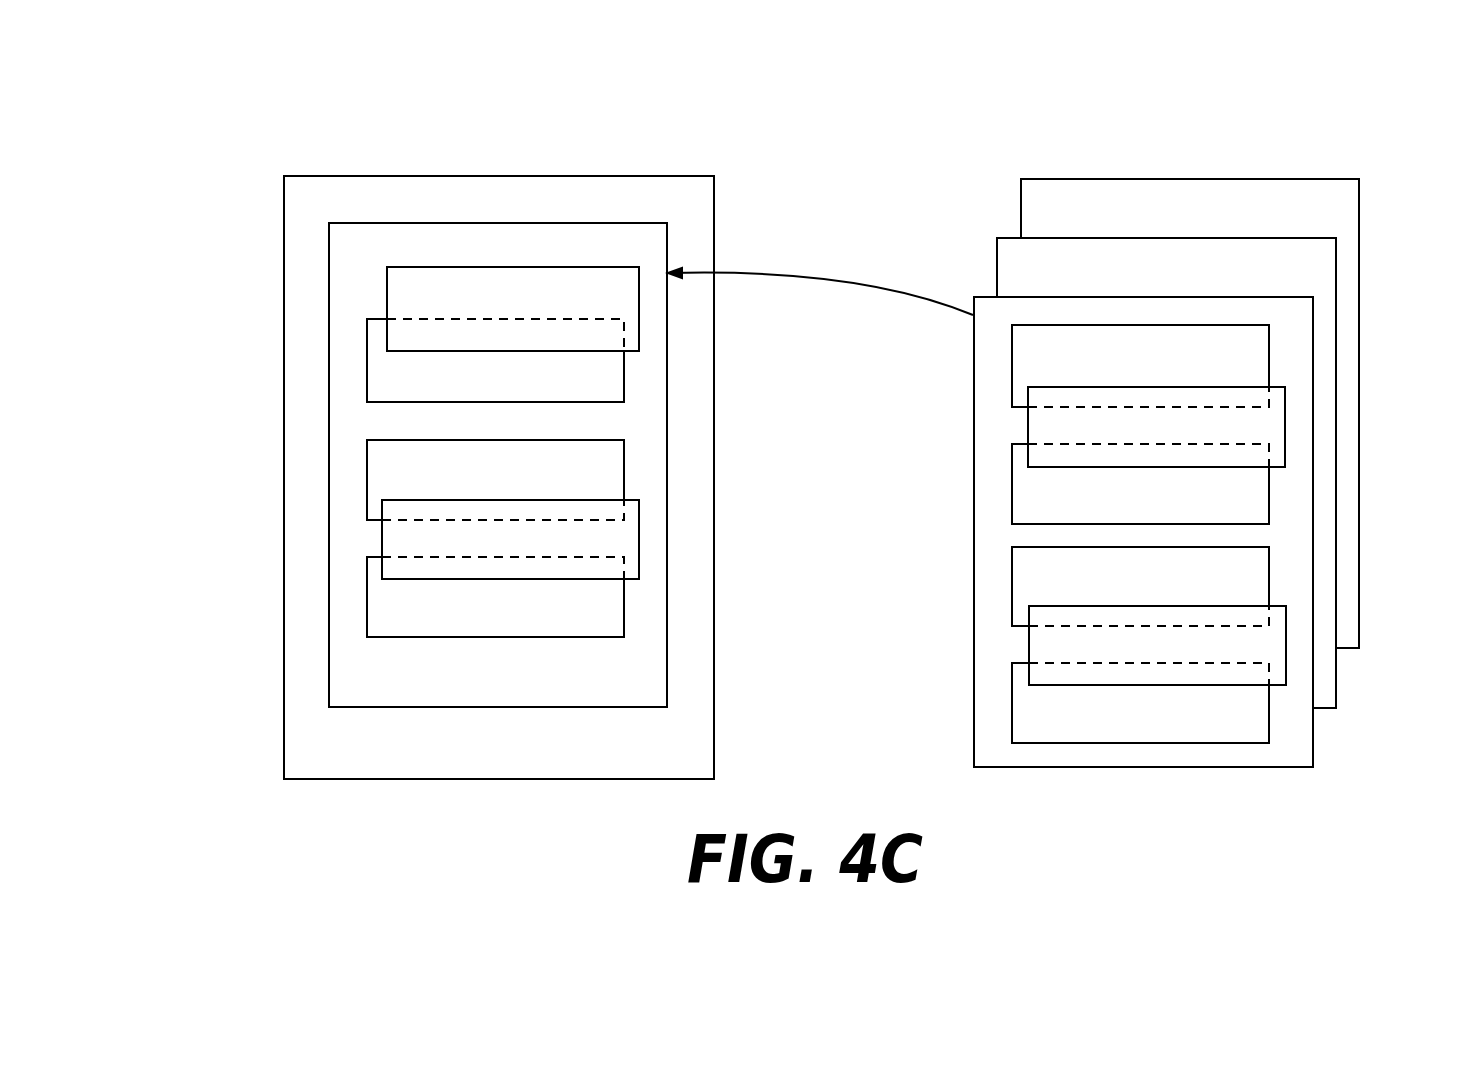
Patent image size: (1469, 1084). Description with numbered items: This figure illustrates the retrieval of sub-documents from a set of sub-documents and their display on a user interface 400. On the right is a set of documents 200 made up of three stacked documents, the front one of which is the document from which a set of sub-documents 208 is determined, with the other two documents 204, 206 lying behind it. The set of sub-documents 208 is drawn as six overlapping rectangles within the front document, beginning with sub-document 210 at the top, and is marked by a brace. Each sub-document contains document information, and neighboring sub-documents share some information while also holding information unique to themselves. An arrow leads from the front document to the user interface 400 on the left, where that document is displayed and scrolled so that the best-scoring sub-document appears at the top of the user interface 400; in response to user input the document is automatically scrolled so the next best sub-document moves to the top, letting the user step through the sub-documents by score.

The user interface 400 is at (355, 158).
The set of documents 200 is at (1378, 657).
The document 204 is at (1323, 466).
The document 206 is at (1352, 406).
The set of sub-documents 208 is at (878, 314).
The sub-document 210 is at (1025, 350).